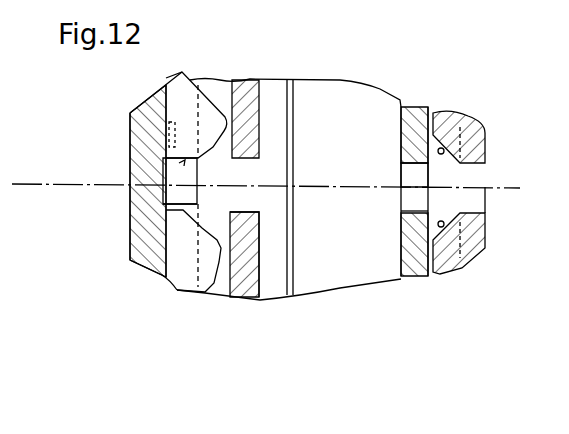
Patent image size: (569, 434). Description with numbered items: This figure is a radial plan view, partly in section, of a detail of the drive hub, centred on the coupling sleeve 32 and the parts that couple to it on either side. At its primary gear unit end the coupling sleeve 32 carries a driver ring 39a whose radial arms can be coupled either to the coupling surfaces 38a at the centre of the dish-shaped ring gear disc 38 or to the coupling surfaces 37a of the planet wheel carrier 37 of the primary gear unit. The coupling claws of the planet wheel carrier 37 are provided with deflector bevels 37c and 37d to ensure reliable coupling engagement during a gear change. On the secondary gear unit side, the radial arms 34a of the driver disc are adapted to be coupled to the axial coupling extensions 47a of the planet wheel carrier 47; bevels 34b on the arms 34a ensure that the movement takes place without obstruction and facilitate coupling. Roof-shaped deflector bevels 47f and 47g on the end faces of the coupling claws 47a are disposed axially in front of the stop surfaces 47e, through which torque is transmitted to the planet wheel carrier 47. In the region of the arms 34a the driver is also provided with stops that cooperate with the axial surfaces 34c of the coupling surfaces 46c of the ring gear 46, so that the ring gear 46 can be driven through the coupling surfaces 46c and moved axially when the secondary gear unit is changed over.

The coupling sleeve 32 is at (362, 107).
The radial arms 34a is at (185, 160).
The bevels 34b is at (182, 201).
The axial surfaces 34c is at (170, 135).
The planet wheel carrier 37 is at (486, 233).
The coupling surfaces 37a is at (484, 214).
The deflector bevel 37c is at (447, 225).
The deflector bevel 37d is at (446, 151).
The ring gear disc 38 is at (407, 271).
The coupling surfaces 38a is at (402, 211).
The driver ring 39a is at (412, 170).
The ring gear 46 is at (253, 275).
The coupling surfaces 46c is at (288, 80).
The planet wheel carrier 47 is at (127, 121).
The axial coupling extensions 47a is at (183, 95).
The stop surfaces 47e is at (152, 178).
The deflector bevel 47f is at (213, 146).
The deflector bevel 47g is at (210, 233).